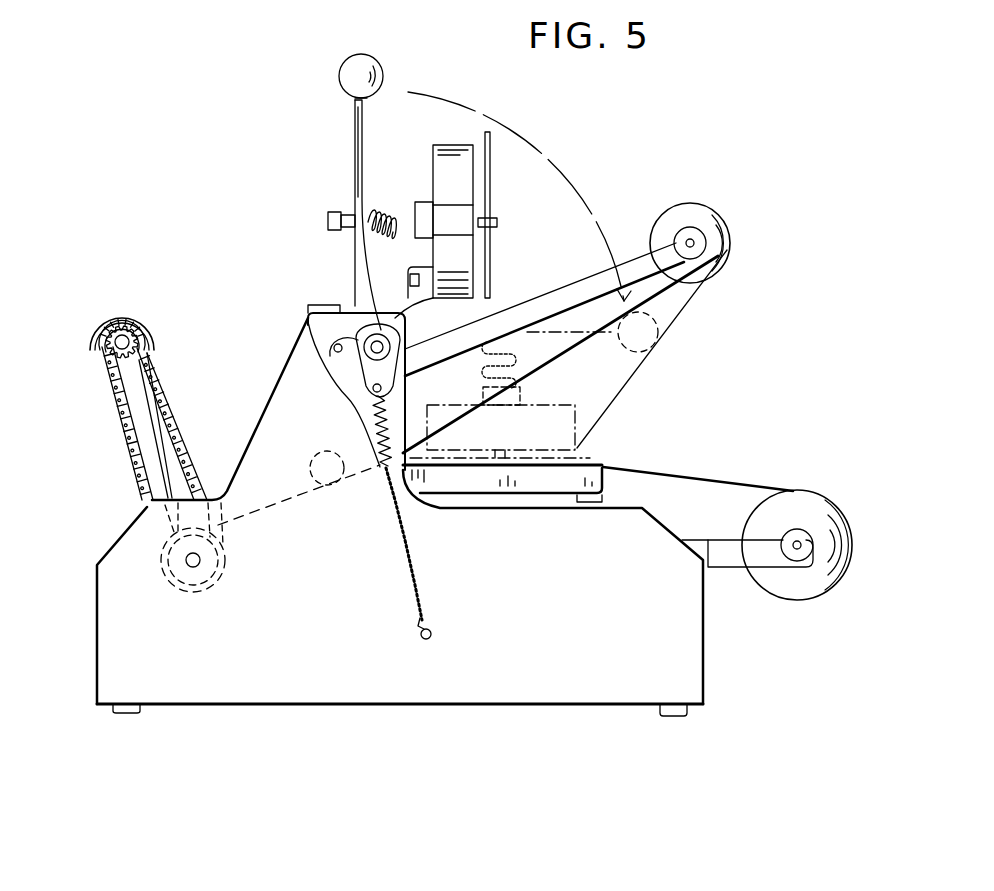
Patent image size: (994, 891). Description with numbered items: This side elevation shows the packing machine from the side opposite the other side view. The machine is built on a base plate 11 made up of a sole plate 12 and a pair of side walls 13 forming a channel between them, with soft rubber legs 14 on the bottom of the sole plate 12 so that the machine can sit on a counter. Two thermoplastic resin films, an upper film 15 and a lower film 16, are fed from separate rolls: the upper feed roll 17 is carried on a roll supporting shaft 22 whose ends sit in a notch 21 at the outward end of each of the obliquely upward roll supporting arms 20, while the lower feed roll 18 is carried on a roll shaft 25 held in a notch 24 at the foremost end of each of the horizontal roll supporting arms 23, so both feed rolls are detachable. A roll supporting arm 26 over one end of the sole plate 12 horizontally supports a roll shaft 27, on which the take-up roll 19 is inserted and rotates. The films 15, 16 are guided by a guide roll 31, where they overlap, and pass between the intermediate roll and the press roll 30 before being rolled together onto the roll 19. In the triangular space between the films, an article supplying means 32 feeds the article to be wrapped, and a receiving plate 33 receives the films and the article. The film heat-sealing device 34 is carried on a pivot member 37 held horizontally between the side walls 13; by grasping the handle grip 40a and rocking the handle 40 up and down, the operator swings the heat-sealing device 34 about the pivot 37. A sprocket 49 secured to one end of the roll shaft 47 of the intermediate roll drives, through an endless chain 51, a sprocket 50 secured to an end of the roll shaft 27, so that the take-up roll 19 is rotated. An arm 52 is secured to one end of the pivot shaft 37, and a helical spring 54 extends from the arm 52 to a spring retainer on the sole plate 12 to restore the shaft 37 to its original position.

The base plate 11 is at (415, 731).
The sole plate 12 is at (544, 692).
The side walls 13 is at (277, 418).
The rubber legs 14 is at (128, 715).
The upper film 15 is at (683, 300).
The lower film 16 is at (741, 483).
The feed roll 17 is at (684, 214).
The feed roll 18 is at (832, 588).
The roll 19 is at (110, 310).
The roll supporting arms 20 is at (549, 296).
The notch 21 is at (727, 250).
The roll supporting shaft 22 is at (698, 229).
The roll supporting arms 23 is at (725, 565).
The notch 24 is at (792, 563).
The roll shaft 25 is at (803, 542).
The roll supporting arm 26 is at (142, 427).
The roll shaft 27 is at (142, 314).
The press roll 30 is at (204, 482).
The guide roll 31 is at (323, 452).
The article supplying means 32 is at (566, 423).
The receiving plate 33 is at (552, 487).
The film heat-sealing device 34 is at (516, 174).
The pivot member 37 is at (365, 333).
The handle 40 is at (354, 148).
The handle grip 40a is at (340, 75).
The roll shaft 47 is at (220, 575).
The sprocket 49 is at (160, 577).
The sprocket 50 is at (155, 342).
The endless chain 51 is at (183, 421).
The arm 52 is at (310, 326).
The helical spring 54 is at (380, 468).